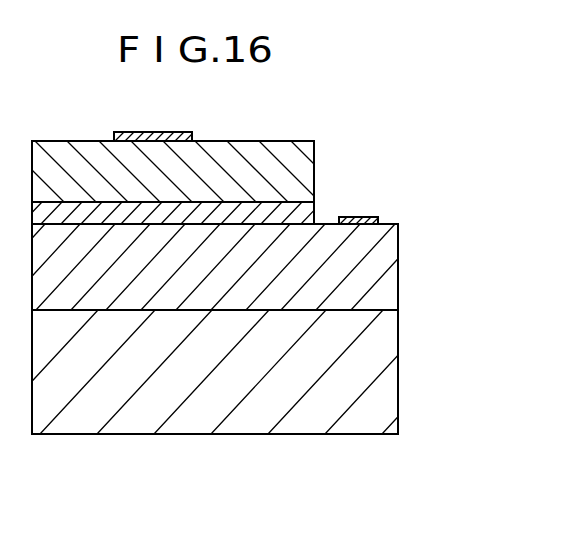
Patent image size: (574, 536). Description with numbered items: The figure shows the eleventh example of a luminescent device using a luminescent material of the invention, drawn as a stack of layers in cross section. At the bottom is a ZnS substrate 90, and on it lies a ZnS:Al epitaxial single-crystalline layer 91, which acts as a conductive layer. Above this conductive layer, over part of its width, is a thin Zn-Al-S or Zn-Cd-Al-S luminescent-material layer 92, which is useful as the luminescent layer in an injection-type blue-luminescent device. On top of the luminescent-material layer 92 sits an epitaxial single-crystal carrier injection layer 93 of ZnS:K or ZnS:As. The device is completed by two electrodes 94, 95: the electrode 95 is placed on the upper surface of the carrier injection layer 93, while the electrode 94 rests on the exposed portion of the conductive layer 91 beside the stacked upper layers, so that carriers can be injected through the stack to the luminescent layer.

The ZnS substrate 90 is at (383, 365).
The ZnS:Al epitaxial single-crystalline layer 91 is at (388, 285).
The Zn-Al-S or Zn-Cd-Al-S luminescent-material layer 92 is at (314, 215).
The epitaxial single-crystal carrier injection layer 93 is at (317, 158).
The electrode 94 is at (378, 221).
The electrode 95 is at (192, 138).